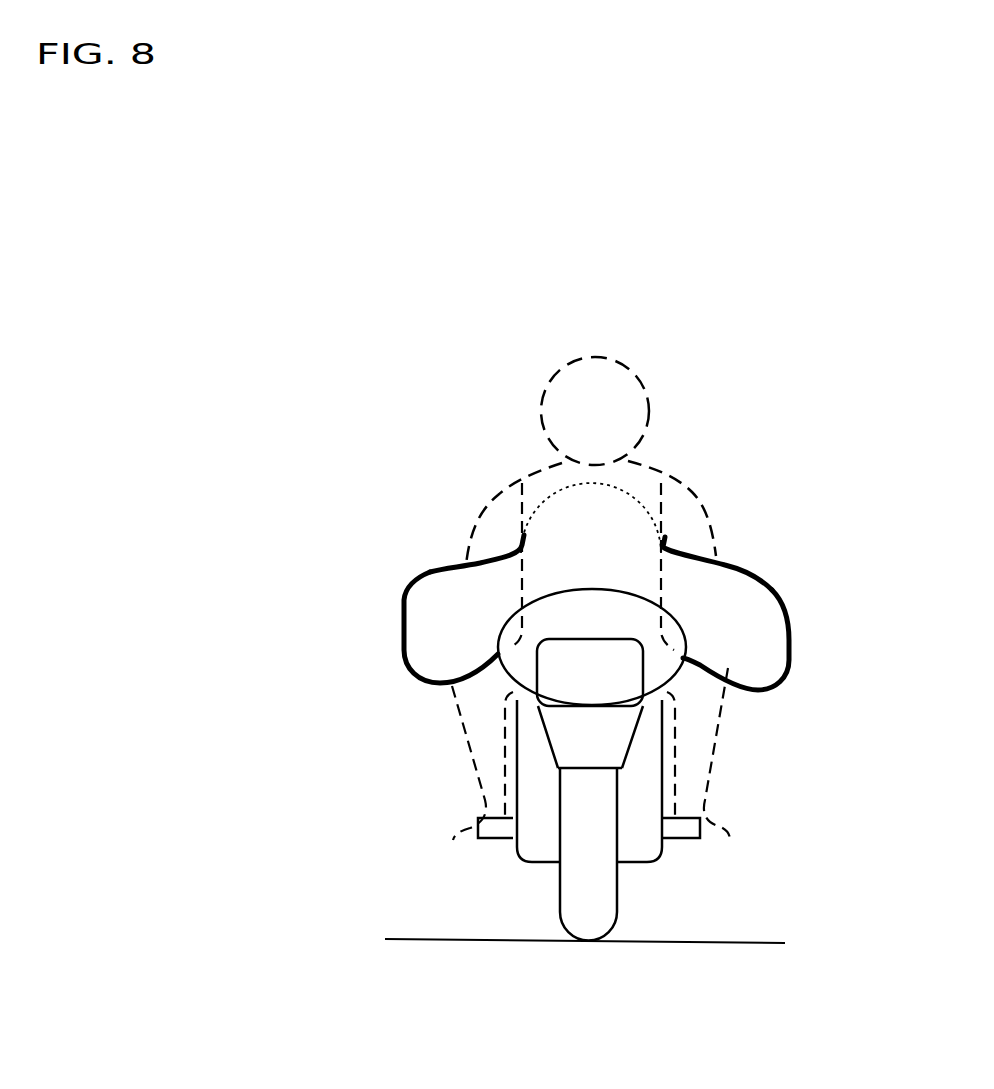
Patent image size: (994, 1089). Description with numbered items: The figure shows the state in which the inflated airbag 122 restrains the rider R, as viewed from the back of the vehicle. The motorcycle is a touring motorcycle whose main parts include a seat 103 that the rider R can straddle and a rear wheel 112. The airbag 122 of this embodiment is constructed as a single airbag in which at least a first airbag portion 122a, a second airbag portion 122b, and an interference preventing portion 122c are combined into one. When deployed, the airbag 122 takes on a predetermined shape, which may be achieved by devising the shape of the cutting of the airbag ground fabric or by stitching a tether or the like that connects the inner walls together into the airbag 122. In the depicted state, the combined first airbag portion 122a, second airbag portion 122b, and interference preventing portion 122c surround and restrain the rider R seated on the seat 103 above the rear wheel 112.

The rider R is at (630, 461).
The seat 103 is at (508, 676).
The rear wheel 112 is at (585, 915).
The airbag 122 is at (598, 560).
The first airbag portion 122a is at (445, 646).
The second airbag portion 122b is at (621, 509).
The interference preventing portion 122c is at (497, 554).